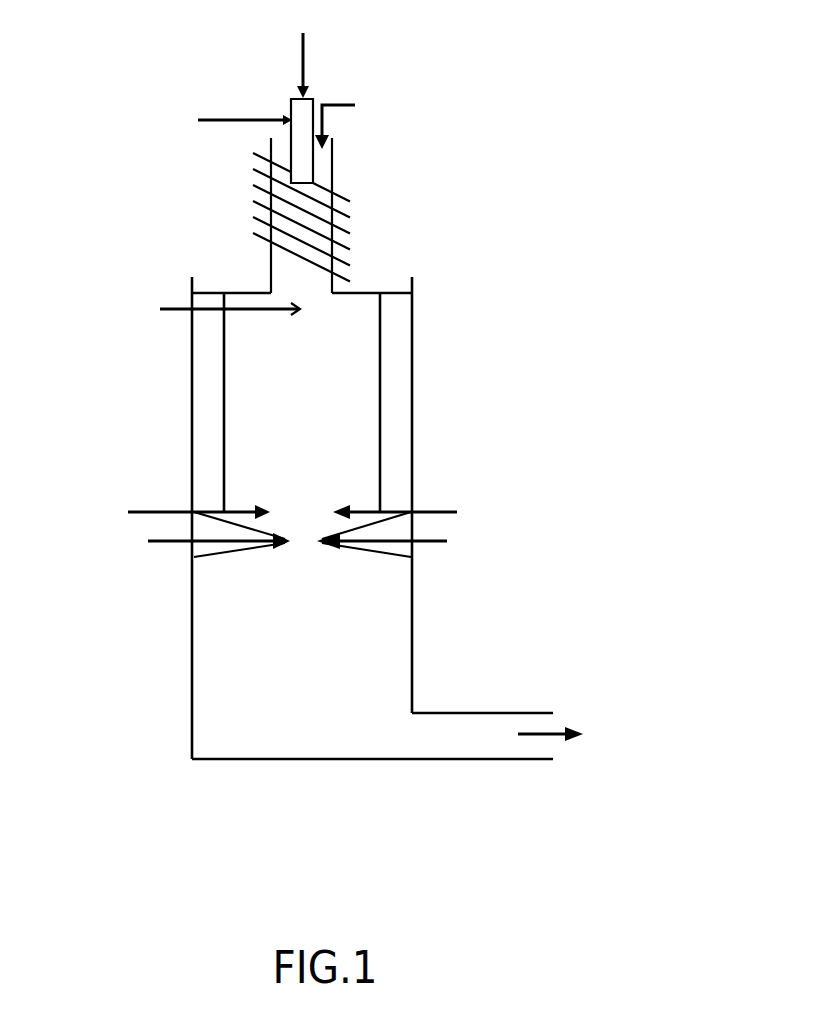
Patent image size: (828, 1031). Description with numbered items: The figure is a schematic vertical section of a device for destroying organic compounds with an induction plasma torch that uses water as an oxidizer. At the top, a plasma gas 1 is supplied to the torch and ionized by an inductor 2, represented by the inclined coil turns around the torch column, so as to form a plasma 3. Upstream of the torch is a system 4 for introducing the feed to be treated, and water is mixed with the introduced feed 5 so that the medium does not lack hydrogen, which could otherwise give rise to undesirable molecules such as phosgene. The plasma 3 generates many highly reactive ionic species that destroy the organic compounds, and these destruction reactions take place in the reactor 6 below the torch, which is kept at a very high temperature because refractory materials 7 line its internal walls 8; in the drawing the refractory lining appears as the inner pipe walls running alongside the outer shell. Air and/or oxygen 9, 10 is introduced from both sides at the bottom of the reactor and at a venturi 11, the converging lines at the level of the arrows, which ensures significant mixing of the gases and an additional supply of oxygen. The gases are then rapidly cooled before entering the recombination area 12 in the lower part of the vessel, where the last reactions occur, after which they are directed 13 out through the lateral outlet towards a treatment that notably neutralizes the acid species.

The plasma gas 1 is at (343, 119).
The inductor 2 is at (287, 210).
The plasma 3 is at (221, 310).
The system for introducing the feed 4 is at (233, 121).
The introduced feed 5 is at (302, 92).
The reactor 6 is at (325, 430).
The refractory materials 7 is at (398, 367).
The internal walls 8 is at (412, 319).
The air and/or oxygen introduction 9 is at (292, 513).
The air and/or oxygen introduction 10 is at (298, 542).
The venturi 11 is at (388, 555).
The recombination area 12 is at (327, 640).
The gas outlet direction 13 is at (547, 745).